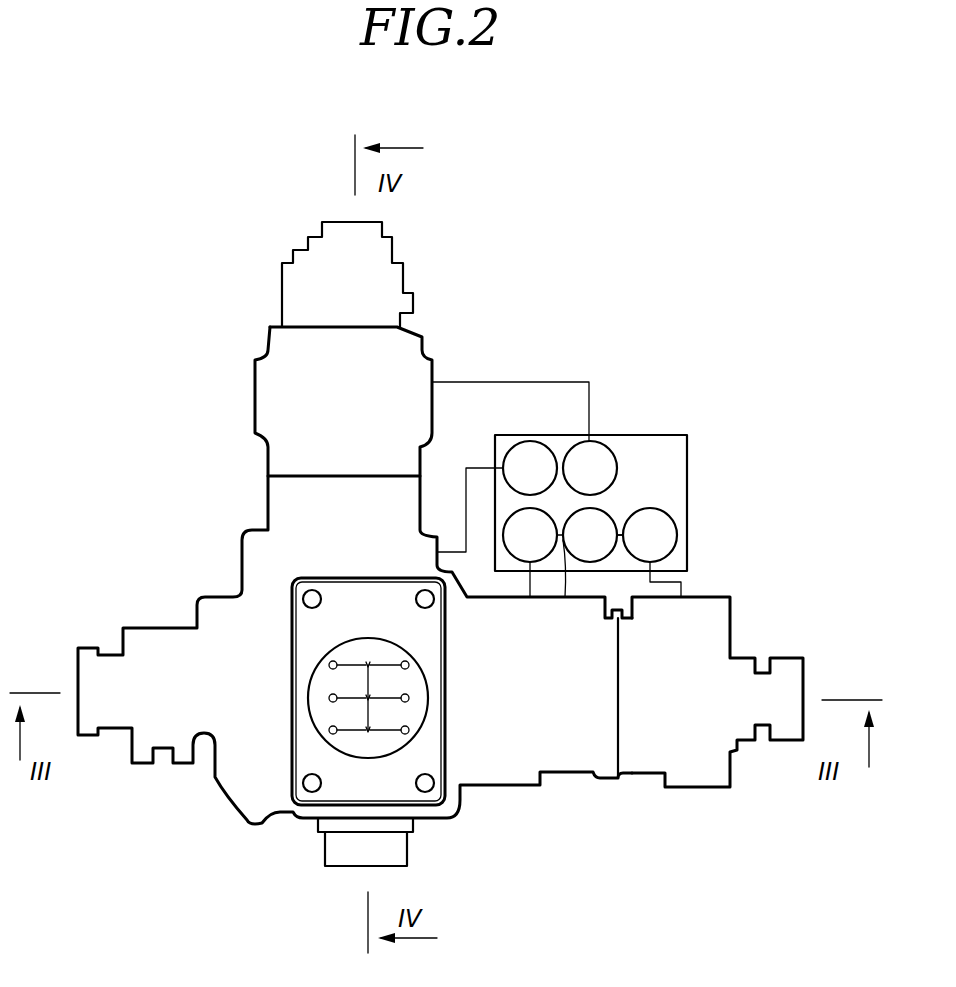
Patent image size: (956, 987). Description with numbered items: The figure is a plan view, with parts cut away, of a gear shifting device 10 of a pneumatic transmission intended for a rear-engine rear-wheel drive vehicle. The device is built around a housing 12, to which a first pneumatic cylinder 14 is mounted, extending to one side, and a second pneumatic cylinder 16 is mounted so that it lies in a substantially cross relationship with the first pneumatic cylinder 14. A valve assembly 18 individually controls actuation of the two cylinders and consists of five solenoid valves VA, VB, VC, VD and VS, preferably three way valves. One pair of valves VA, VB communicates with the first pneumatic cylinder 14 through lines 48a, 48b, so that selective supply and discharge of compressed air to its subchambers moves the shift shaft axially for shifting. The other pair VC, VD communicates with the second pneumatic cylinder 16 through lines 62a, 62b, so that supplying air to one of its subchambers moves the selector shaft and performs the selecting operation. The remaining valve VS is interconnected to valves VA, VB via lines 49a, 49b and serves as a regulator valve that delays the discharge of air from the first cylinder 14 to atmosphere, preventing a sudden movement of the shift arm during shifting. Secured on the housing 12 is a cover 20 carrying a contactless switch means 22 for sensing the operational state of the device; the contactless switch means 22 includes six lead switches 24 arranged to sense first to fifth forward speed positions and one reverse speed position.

The gear shifting device 10 is at (790, 622).
The housing 12 is at (300, 832).
The first pneumatic cylinder 14 is at (708, 775).
The second pneumatic cylinder 16 is at (298, 282).
The valve assembly 18 is at (689, 437).
The cover 20 is at (318, 632).
The contactless switch means 22 is at (320, 710).
The lead switches 24 is at (407, 700).
The line 48a is at (530, 575).
The line 48b is at (681, 588).
The line 49a is at (565, 597).
The line 49b is at (620, 535).
The line 62a is at (482, 468).
The line 62b is at (508, 380).